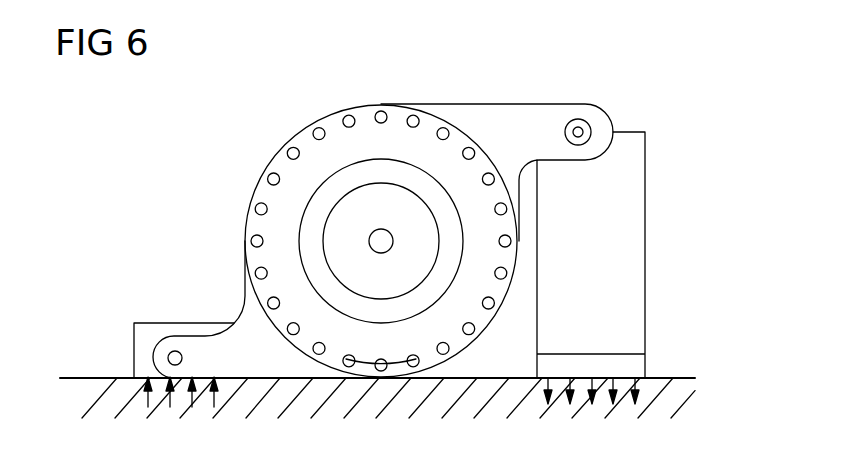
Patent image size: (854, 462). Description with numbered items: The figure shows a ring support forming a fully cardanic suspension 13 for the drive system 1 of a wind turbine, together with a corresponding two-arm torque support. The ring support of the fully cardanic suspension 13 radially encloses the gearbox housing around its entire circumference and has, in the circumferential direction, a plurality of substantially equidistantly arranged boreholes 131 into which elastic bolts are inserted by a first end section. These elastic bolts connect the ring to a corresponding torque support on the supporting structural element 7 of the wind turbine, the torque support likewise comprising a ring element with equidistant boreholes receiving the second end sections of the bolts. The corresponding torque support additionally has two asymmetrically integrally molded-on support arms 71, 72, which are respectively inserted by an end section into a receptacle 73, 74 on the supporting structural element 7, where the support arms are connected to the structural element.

The electric machine 1 is at (324, 176).
The boreholes 131 is at (344, 114).
The fully cardanic suspension 13 is at (393, 365).
The support arm 72 is at (552, 103).
The receptacle 74 is at (645, 219).
The supporting structural element 7 is at (683, 378).
The support arm 71 is at (190, 335).
The receptacle 73 is at (153, 358).